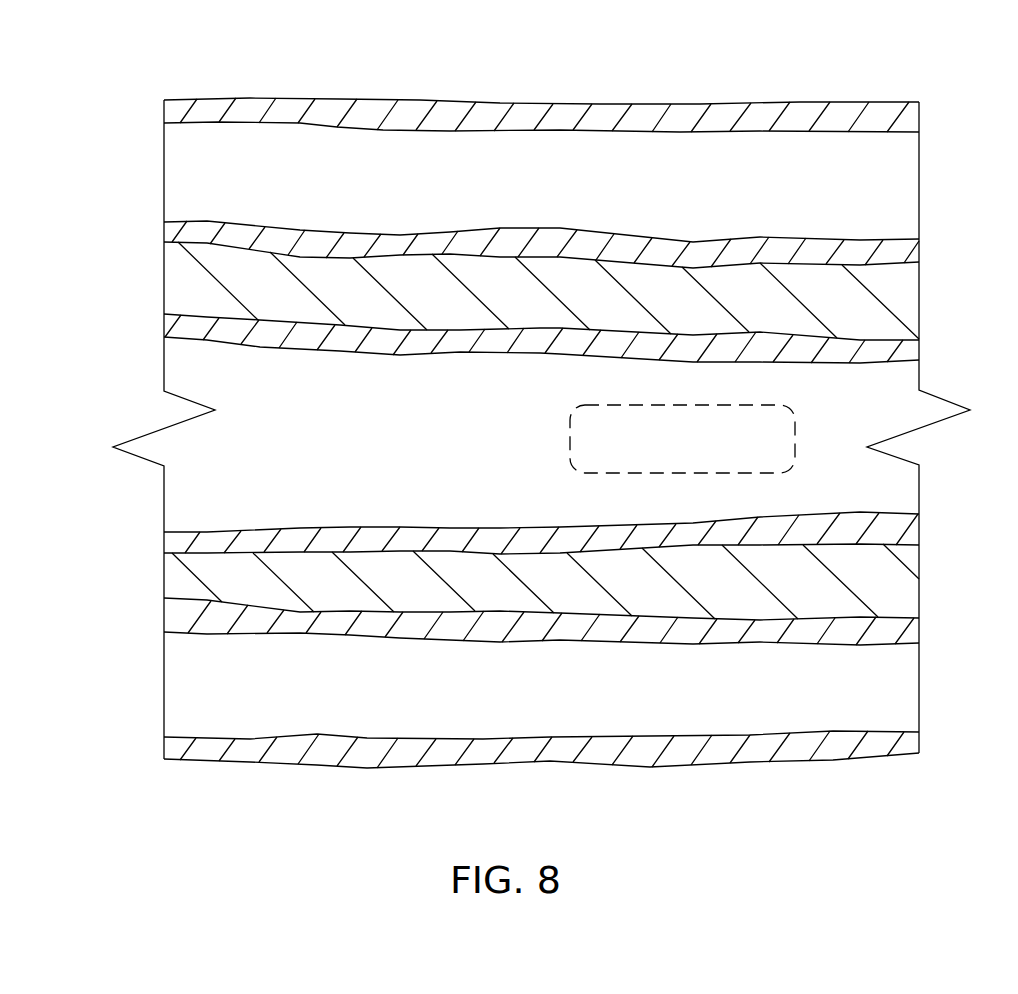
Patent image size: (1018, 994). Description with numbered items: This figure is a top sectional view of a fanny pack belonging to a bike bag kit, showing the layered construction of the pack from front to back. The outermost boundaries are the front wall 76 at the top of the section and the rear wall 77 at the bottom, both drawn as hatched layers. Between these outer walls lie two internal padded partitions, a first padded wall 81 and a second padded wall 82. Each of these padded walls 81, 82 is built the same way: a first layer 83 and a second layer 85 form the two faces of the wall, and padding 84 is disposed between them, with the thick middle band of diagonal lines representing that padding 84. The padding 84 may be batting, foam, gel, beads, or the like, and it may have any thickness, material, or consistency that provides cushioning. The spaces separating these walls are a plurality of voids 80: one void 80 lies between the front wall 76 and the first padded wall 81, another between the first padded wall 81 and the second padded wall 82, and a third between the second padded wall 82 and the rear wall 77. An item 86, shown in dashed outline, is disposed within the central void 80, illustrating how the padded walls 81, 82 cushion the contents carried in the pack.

The front wall 76 is at (590, 103).
The rear wall 77 is at (672, 768).
The voids 80 is at (412, 190).
The first padded wall 81 is at (142, 218).
The second padded wall 82 is at (142, 532).
The first layer 83 is at (870, 240).
The padding 84 is at (905, 315).
The second layer 85 is at (917, 342).
The item 86 is at (682, 439).